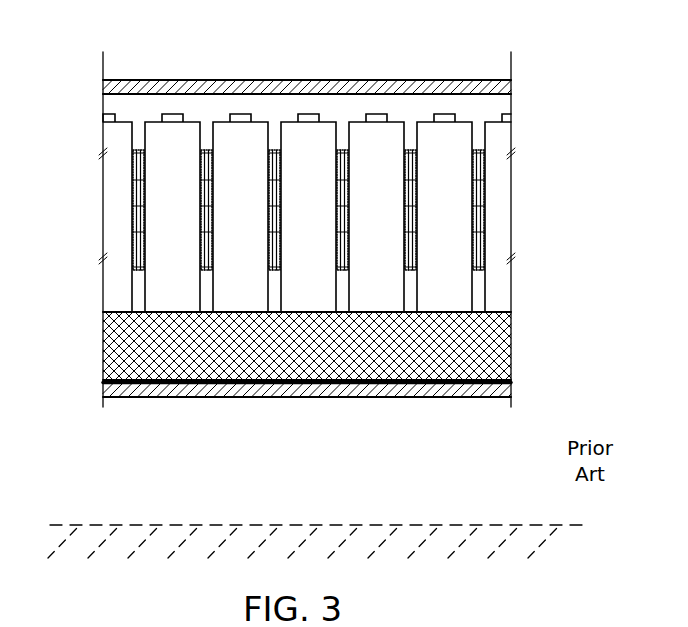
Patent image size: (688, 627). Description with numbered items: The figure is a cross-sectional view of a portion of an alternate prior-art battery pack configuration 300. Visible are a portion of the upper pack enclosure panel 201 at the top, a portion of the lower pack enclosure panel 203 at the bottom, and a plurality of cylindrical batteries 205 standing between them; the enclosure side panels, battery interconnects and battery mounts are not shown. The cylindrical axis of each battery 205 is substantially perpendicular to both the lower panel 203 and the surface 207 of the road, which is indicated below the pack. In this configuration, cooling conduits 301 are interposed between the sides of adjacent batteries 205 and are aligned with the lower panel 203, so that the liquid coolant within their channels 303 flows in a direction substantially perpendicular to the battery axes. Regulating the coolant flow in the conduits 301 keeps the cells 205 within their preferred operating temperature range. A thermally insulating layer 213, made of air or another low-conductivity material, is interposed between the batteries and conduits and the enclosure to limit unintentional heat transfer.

The battery pack configuration 300 is at (550, 75).
The upper pack enclosure panel 201 is at (213, 80).
The batteries 205 is at (191, 219).
The channels 303 is at (132, 253).
The cooling conduits 301 is at (343, 272).
The thermally insulating layer 213 is at (103, 367).
The lower pack enclosure panel 203 is at (350, 397).
The surface of the road 207 is at (295, 526).